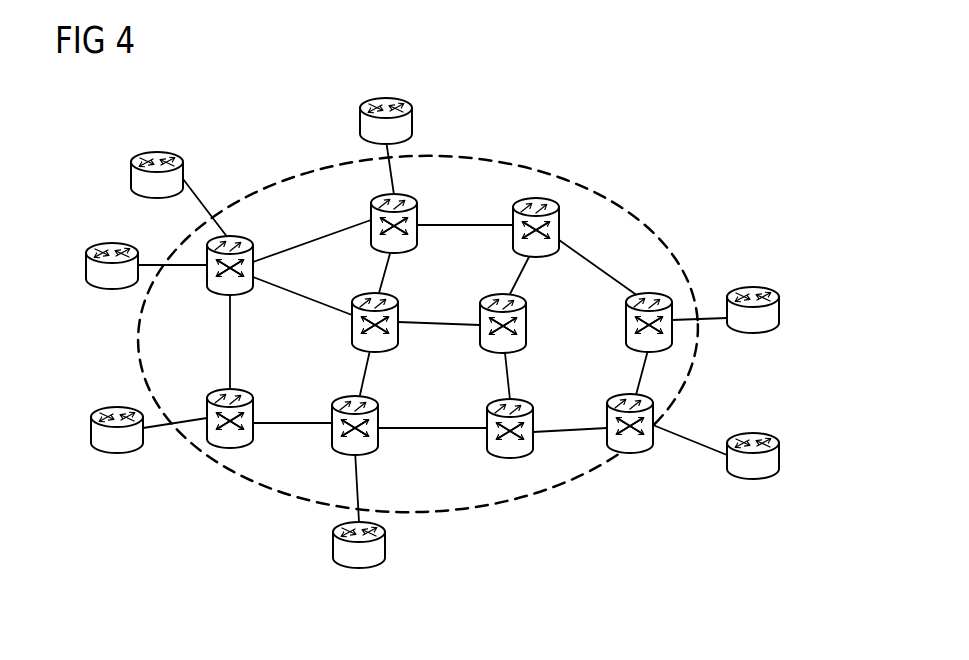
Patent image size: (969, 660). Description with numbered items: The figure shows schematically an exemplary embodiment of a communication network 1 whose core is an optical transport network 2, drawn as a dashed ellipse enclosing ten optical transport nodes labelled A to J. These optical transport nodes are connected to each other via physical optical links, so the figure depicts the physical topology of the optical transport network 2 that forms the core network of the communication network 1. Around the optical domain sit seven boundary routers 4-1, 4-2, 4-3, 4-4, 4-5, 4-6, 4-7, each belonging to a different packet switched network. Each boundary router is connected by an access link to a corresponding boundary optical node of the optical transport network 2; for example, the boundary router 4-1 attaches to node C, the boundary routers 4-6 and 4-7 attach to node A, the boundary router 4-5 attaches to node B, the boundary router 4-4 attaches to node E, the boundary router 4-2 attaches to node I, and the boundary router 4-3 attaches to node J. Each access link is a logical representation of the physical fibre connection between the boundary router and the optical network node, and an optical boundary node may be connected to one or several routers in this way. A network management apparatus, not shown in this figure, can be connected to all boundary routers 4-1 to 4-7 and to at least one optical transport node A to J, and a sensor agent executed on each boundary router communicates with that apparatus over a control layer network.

The communication network 1 is at (606, 145).
The optical transport network 2 is at (496, 162).
The boundary router 4-1 is at (386, 96).
The boundary router 4-2 is at (780, 315).
The boundary router 4-3 is at (780, 464).
The boundary router 4-4 is at (387, 546).
The boundary router 4-5 is at (117, 456).
The boundary router 4-6 is at (113, 292).
The boundary router 4-7 is at (161, 152).